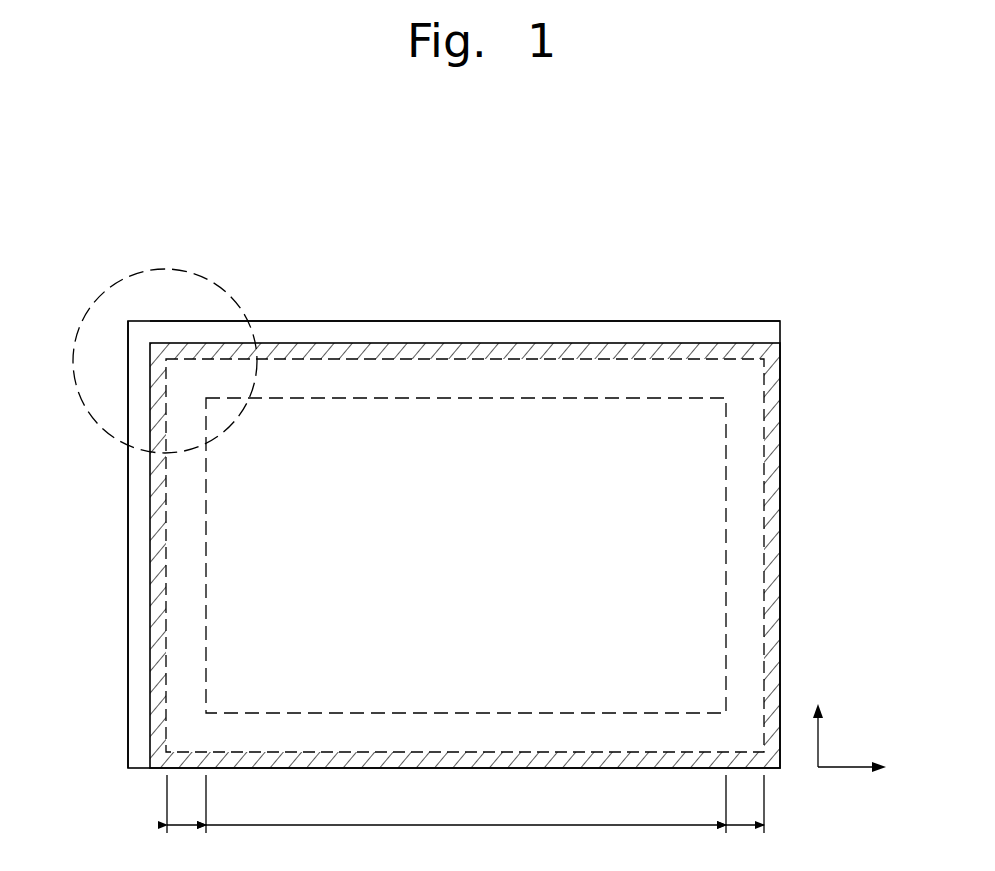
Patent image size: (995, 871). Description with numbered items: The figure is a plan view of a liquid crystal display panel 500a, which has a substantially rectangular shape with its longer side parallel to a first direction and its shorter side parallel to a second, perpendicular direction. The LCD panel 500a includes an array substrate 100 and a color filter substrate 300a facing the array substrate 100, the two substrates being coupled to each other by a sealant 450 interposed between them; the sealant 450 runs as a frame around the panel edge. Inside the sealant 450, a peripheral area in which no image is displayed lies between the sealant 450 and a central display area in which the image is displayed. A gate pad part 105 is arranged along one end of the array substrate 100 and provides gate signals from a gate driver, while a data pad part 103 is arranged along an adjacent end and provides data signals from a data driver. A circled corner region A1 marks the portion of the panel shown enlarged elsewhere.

The LCD panel 500a is at (882, 240).
The array substrate 100 is at (743, 320).
The data pad part 103 is at (467, 330).
The gate pad part 105 is at (133, 558).
The color filter substrate 300a is at (743, 343).
The sealant 450 is at (153, 665).
The enlarged region A1 is at (158, 270).